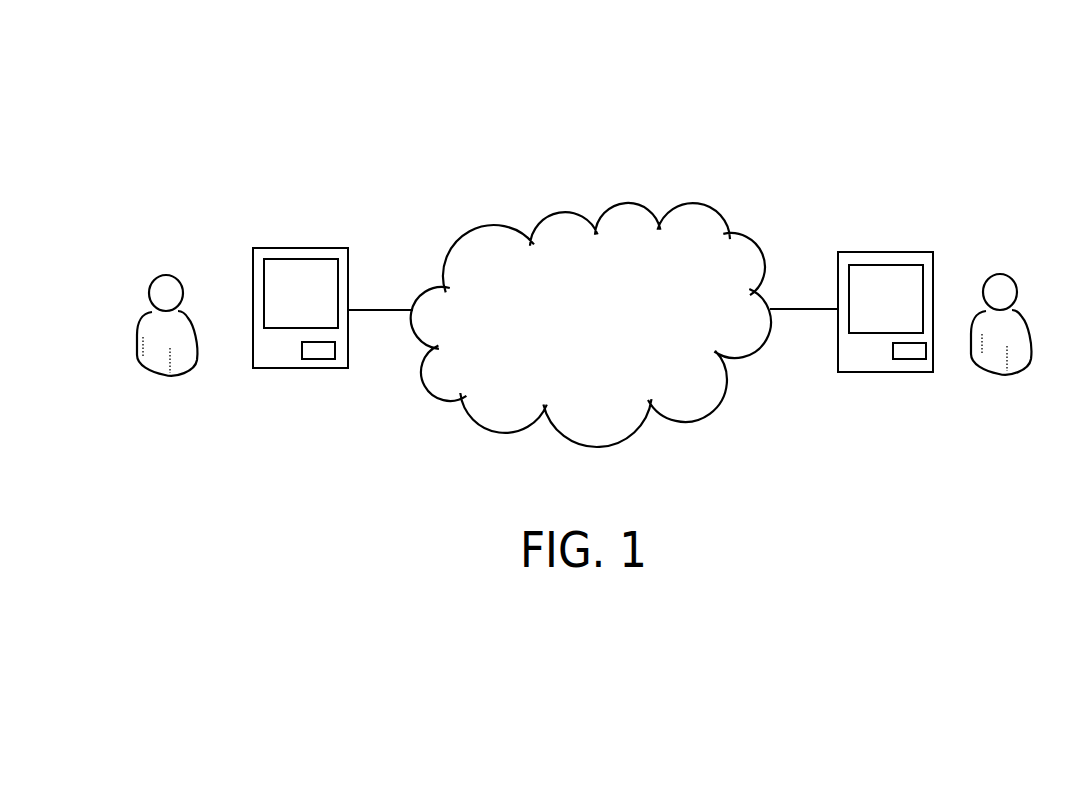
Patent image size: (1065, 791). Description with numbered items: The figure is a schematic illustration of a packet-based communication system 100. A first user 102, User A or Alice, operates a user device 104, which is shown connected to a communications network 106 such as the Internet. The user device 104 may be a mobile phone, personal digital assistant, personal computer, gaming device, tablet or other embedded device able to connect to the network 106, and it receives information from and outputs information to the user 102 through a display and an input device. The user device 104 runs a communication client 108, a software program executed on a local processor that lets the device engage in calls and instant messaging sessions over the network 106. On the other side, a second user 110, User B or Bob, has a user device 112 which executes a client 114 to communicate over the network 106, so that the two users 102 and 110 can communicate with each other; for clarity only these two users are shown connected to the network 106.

The packet-based communication system 100 is at (881, 105).
The first user 102 is at (163, 277).
The user device 104 is at (303, 248).
The communications network 106 is at (692, 208).
The communication client 108 is at (325, 362).
The second user 110 is at (998, 273).
The user device 112 is at (857, 252).
The client 114 is at (918, 364).